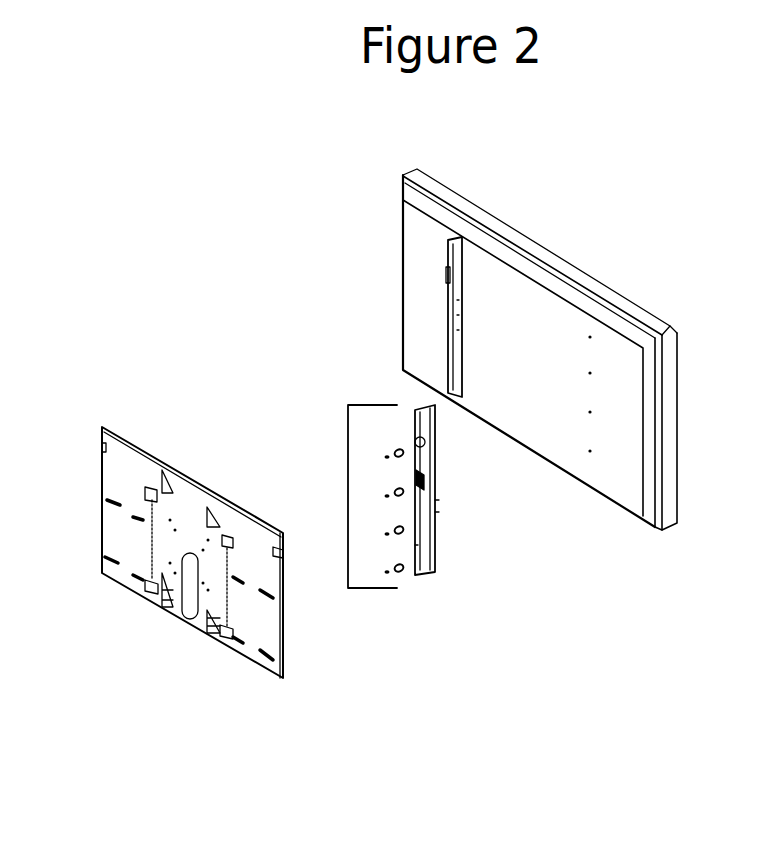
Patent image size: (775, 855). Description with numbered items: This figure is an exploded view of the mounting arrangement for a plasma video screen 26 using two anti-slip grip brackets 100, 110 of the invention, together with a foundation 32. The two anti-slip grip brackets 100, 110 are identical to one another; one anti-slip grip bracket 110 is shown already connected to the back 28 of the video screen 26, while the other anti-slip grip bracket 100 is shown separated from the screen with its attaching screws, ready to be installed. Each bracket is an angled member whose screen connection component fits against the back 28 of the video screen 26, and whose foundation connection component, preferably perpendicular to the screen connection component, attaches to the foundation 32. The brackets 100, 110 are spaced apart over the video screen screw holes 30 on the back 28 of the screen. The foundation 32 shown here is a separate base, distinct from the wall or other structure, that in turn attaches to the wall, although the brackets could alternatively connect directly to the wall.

The video screen 26 is at (563, 215).
The back of the video screen 28 is at (628, 478).
The video screen screw holes 30 is at (598, 370).
The foundation 32 is at (128, 618).
The anti-slip grip bracket 100 is at (348, 492).
The anti-slip grip bracket 110 is at (437, 320).